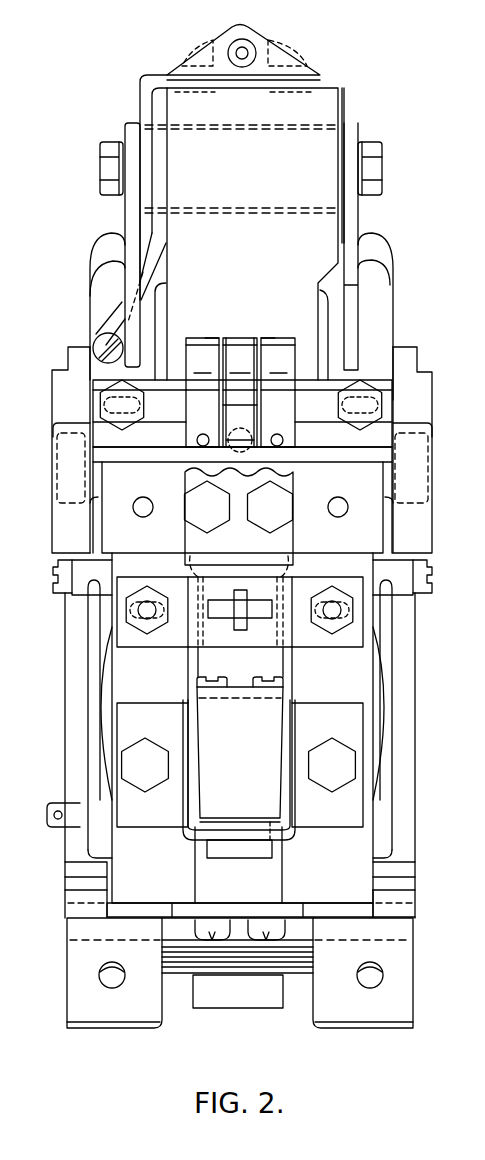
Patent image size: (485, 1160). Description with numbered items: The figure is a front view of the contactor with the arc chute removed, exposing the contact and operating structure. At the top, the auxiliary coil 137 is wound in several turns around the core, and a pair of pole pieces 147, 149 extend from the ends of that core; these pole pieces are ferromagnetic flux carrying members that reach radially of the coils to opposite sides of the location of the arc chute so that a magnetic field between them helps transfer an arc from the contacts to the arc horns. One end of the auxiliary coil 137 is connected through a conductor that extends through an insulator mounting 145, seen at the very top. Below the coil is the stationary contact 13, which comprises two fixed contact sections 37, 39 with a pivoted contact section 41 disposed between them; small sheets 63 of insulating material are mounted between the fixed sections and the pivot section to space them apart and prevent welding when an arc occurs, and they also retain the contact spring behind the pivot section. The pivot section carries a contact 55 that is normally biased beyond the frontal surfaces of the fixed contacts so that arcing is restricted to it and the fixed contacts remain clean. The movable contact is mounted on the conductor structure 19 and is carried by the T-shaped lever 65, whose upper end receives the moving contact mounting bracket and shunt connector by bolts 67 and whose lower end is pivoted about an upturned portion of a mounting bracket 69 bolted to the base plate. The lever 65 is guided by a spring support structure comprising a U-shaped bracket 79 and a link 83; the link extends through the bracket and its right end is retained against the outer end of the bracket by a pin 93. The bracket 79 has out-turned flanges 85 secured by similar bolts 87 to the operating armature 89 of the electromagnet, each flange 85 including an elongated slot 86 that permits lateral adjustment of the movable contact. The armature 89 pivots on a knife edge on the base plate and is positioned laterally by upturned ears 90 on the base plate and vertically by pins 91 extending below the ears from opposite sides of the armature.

The insulator mounting 145 is at (290, 60).
The auxiliary coil 137 is at (310, 125).
The pole piece 147 is at (128, 208).
The pole piece 149 is at (352, 224).
The insulating sheets 63 is at (213, 337).
The fixed contact section 37 is at (200, 338).
The pivoted contact section 41 is at (245, 338).
The fixed contact section 39 is at (283, 338).
The stationary contact 13 is at (242, 364).
The contact 55 is at (240, 364).
The lever 65 is at (170, 488).
The conductor structure 19 is at (249, 493).
The operating armature 89 is at (137, 562).
The bolts 67 is at (267, 516).
The pin 93 is at (222, 610).
The elongated hole or slot 86 is at (137, 585).
The bolts 87 is at (137, 630).
The out-turned flanges 85 is at (177, 622).
The U-shaped bracket 79 is at (200, 640).
The link 83 is at (240, 630).
The mounting bracket 69 is at (210, 875).
The upturned ears 90 is at (68, 866).
The pins 91 is at (75, 882).